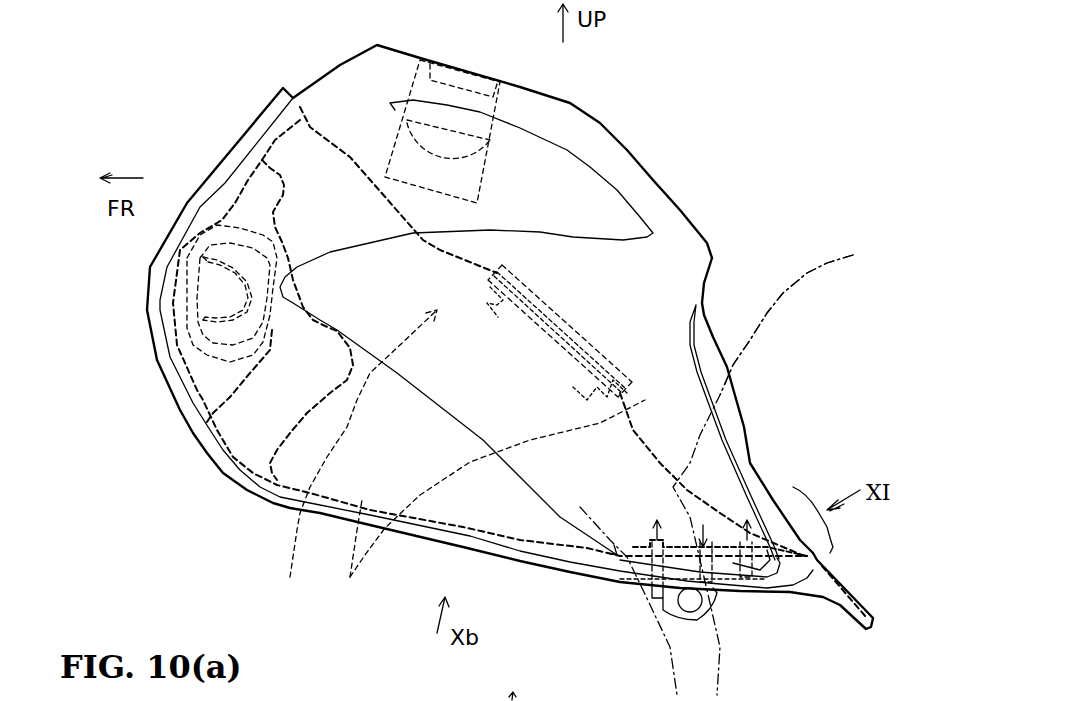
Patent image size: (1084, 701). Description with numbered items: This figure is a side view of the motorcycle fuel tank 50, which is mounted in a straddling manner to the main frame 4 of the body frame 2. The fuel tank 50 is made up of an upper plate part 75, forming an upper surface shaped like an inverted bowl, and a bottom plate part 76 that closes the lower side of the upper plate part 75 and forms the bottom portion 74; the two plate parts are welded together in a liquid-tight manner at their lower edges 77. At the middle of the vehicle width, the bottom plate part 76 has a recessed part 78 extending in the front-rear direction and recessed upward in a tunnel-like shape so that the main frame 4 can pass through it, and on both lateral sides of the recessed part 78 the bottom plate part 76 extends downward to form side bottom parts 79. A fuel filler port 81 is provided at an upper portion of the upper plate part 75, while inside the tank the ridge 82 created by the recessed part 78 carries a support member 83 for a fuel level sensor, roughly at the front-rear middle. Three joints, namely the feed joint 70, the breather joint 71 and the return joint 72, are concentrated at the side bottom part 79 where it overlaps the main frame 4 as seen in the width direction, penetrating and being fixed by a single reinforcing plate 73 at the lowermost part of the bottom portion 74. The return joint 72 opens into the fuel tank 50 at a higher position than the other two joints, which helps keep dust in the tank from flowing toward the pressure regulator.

The body frame 2 is at (741, 469).
The main frame 4 is at (786, 325).
The fuel tank 50 is at (692, 147).
The feed joint 70 is at (670, 610).
The breather joint 71 is at (637, 563).
The return joint 72 is at (765, 590).
The reinforcing plate 73 is at (717, 557).
The bottom portion 74 is at (405, 553).
The upper plate part 75 is at (627, 150).
The bottom plate part 76 is at (760, 678).
The lower edges 77 is at (263, 502).
The recessed part 78 is at (357, 461).
The side bottom parts 79 is at (563, 550).
The fuel filler port 81 is at (403, 137).
The ridge 82 is at (477, 266).
The support member 83 is at (583, 333).